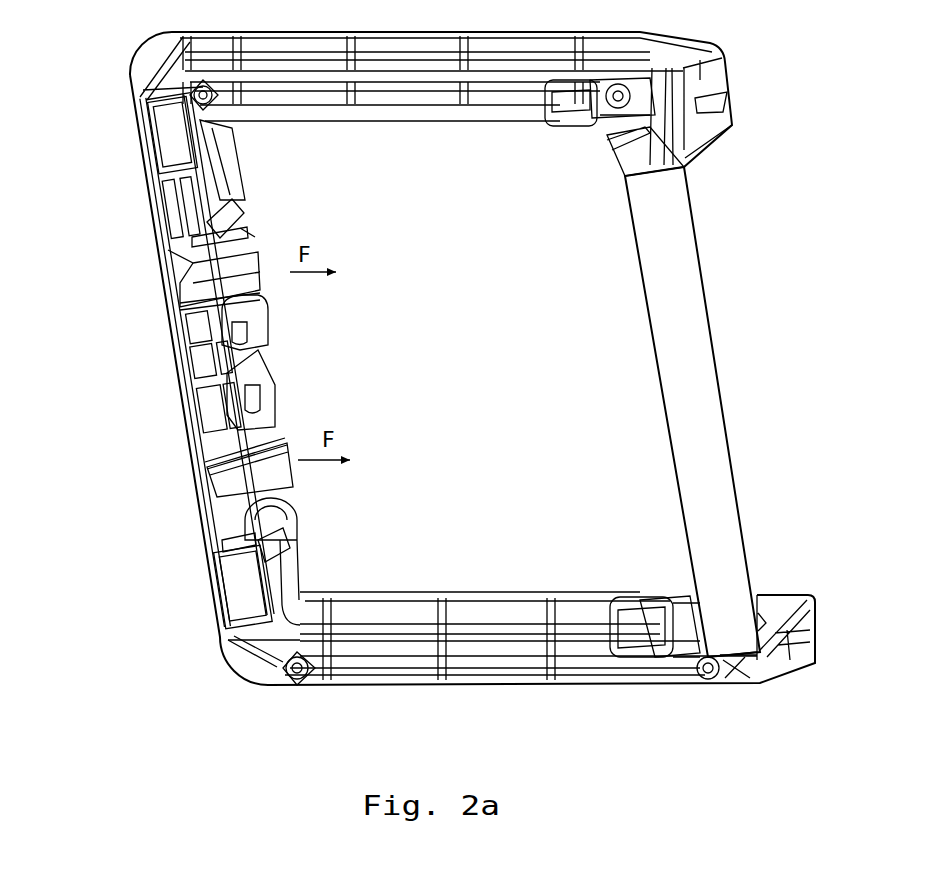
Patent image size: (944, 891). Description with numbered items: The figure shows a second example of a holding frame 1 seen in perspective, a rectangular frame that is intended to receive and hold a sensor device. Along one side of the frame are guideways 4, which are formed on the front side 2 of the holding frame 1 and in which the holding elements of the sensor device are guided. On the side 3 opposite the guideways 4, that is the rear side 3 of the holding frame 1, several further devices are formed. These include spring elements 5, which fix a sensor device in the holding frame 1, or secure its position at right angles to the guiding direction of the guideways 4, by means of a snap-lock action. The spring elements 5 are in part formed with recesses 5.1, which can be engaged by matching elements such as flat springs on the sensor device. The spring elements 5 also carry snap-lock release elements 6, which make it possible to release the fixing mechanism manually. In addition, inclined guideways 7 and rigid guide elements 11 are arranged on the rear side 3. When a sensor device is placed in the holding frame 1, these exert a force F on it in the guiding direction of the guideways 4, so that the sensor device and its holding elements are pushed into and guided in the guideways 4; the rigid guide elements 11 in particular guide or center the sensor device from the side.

The holding frame 1 is at (66, 103).
The front side 2 is at (749, 378).
The rear side 3 is at (143, 388).
The guideways 4 is at (603, 132).
The spring elements 5 is at (237, 155).
The recesses 5.1 is at (257, 200).
The snap-lock release elements 6 is at (192, 232).
The inclined guideways 7 is at (237, 275).
The rigid guide elements 11 is at (235, 300).